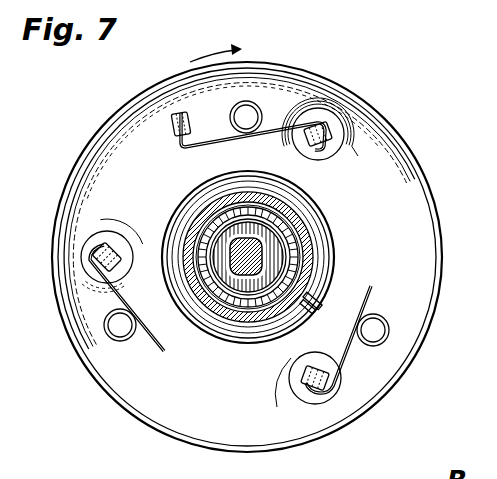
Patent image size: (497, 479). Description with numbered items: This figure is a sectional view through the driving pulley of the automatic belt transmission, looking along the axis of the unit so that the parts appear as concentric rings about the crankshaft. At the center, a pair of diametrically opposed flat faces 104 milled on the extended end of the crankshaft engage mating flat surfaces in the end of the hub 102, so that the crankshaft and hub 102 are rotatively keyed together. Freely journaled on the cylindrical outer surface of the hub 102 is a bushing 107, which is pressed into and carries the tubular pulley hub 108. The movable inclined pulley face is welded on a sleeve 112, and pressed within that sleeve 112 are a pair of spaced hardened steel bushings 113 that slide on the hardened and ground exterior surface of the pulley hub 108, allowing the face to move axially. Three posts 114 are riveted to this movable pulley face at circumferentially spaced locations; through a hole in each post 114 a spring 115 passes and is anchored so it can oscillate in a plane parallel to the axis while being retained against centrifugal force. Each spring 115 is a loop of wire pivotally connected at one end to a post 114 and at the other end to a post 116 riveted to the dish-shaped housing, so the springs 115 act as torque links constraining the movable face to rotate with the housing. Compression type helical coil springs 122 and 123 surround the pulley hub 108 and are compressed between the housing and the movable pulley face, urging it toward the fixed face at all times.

The hub 102 is at (226, 233).
The flat faces 104 is at (265, 260).
The bushing 107 is at (303, 233).
The pulley hub 108 is at (283, 218).
The sleeve 112 is at (213, 312).
The hardened steel bushings 113 is at (260, 307).
The posts 114 is at (334, 126).
The springs 115 is at (262, 106).
The posts 116 is at (170, 122).
The helical coil spring 122 is at (238, 193).
The helical coil spring 123 is at (264, 190).